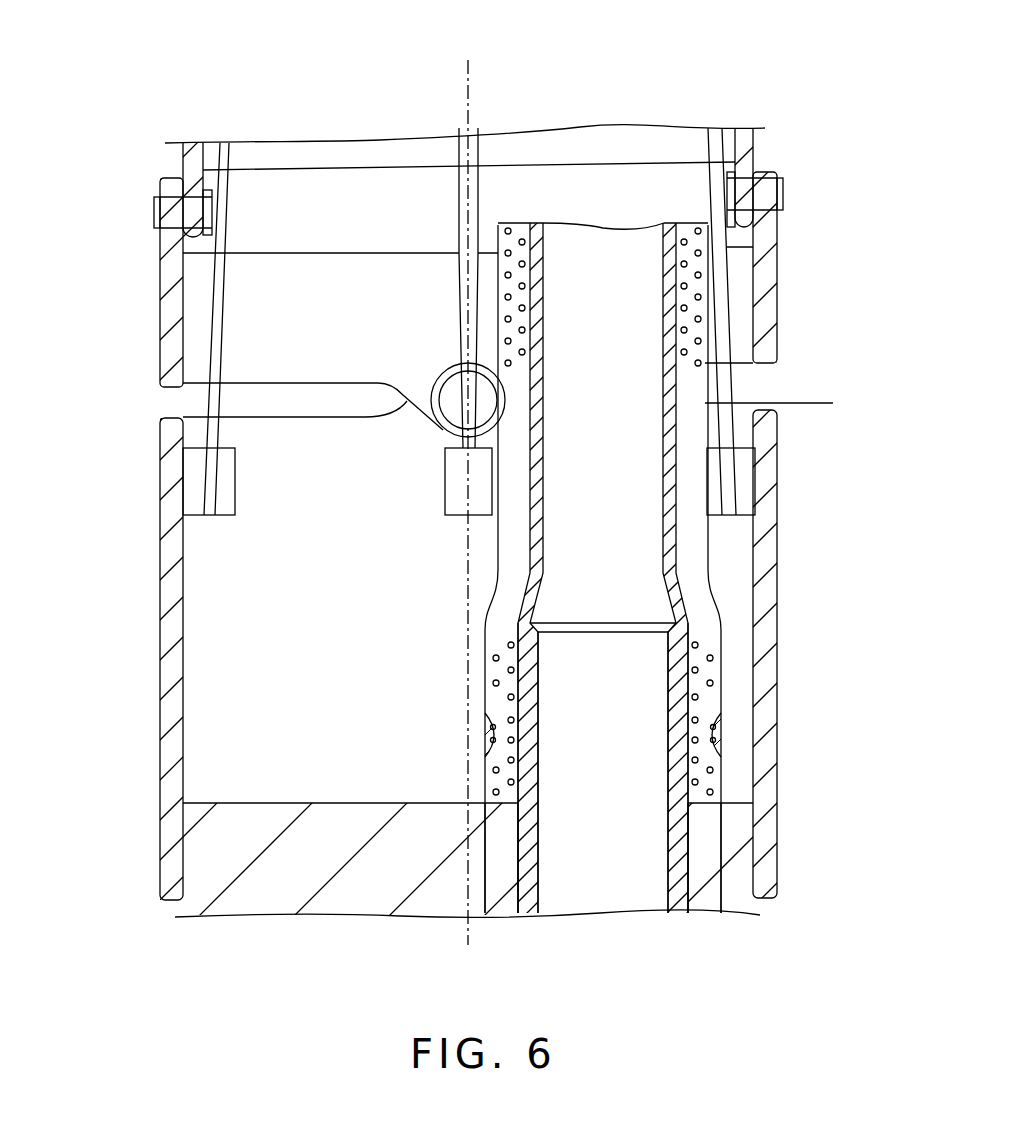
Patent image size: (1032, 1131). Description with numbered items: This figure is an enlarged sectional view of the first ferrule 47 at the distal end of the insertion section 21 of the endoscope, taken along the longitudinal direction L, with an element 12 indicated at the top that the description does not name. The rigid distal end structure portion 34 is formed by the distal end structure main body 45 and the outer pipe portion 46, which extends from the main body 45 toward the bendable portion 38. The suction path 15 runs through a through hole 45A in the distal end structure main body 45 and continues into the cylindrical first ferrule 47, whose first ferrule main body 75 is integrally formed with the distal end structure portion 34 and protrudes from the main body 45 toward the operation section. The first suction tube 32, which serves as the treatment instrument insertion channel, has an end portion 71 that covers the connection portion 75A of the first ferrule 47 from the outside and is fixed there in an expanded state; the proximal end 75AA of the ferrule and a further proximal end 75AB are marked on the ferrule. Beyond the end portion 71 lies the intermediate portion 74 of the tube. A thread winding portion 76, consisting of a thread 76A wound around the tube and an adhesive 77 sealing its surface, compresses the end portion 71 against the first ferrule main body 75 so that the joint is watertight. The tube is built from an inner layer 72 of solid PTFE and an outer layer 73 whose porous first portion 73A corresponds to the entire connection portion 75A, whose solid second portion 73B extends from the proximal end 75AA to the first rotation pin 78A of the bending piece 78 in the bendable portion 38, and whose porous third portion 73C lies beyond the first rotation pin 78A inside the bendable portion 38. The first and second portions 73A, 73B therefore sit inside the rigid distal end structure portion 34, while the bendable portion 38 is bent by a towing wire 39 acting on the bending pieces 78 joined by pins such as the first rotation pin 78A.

The ink jet head / housing 12 is at (664, 101).
The insertion section 21 is at (802, 160).
The bending piece 78 is at (205, 160).
The towing wire 39 is at (215, 306).
The bendable portion 38 is at (97, 130).
The intermediate portion 74 is at (381, 222).
The first rotation pin 78A is at (450, 387).
The first suction tube 32 is at (605, 232).
The third portion 73C is at (506, 228).
The outer layer 73 is at (500, 546).
The inner layer 72 is at (538, 493).
The suction path 15 is at (603, 386).
The proximal end 75AA is at (638, 618).
The first ferrule main body 75 is at (570, 620).
The first ferrule 47 is at (607, 686).
The second portion 73B is at (835, 405).
The outer pipe portion 46 is at (165, 629).
The distal end structure portion 34 is at (97, 418).
The connection portion 75A is at (410, 625).
The thread winding portion 76 is at (491, 718).
The thread 76A is at (491, 746).
The adhesive 77 is at (488, 752).
The first portion 73A is at (835, 625).
The distal end structure main body 45 is at (315, 818).
The through hole 45A is at (587, 897).
The proximal end 75AB is at (537, 793).
The end portion 71 is at (505, 812).
The longitudinal direction L is at (479, 72).